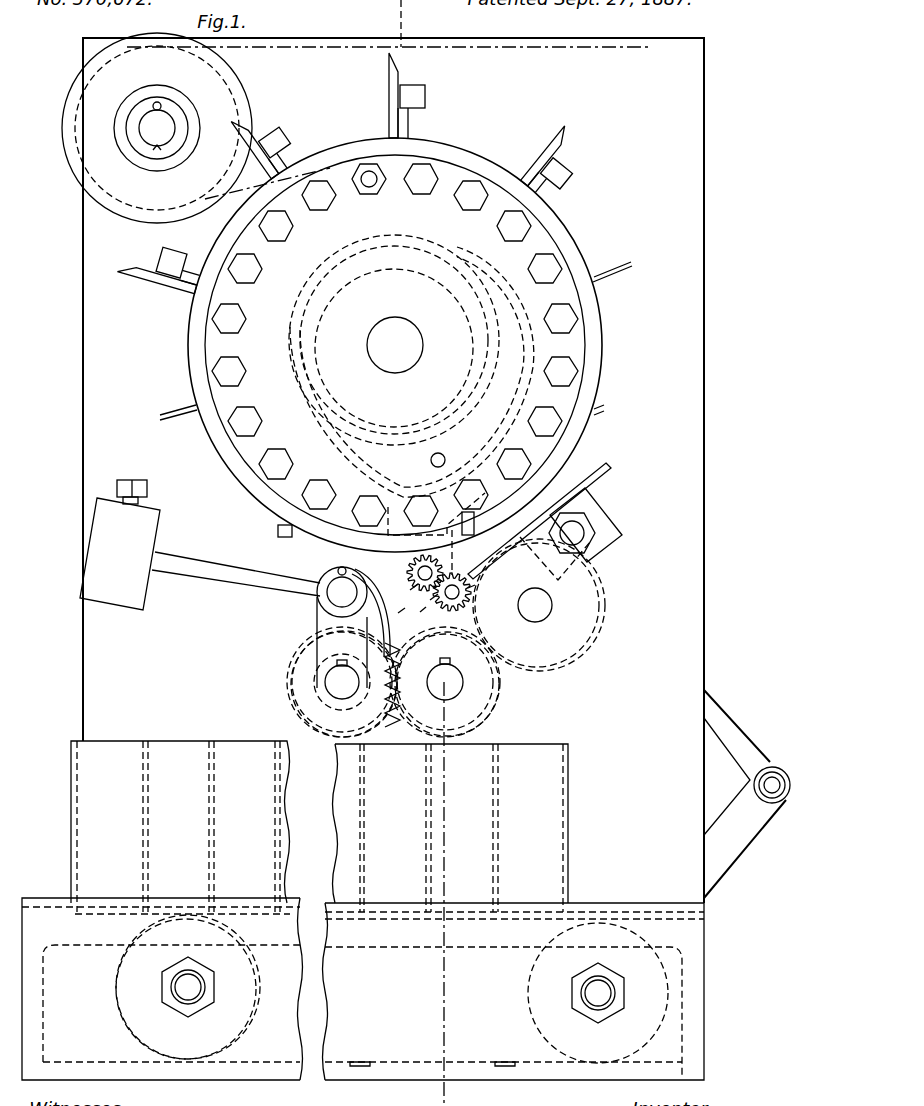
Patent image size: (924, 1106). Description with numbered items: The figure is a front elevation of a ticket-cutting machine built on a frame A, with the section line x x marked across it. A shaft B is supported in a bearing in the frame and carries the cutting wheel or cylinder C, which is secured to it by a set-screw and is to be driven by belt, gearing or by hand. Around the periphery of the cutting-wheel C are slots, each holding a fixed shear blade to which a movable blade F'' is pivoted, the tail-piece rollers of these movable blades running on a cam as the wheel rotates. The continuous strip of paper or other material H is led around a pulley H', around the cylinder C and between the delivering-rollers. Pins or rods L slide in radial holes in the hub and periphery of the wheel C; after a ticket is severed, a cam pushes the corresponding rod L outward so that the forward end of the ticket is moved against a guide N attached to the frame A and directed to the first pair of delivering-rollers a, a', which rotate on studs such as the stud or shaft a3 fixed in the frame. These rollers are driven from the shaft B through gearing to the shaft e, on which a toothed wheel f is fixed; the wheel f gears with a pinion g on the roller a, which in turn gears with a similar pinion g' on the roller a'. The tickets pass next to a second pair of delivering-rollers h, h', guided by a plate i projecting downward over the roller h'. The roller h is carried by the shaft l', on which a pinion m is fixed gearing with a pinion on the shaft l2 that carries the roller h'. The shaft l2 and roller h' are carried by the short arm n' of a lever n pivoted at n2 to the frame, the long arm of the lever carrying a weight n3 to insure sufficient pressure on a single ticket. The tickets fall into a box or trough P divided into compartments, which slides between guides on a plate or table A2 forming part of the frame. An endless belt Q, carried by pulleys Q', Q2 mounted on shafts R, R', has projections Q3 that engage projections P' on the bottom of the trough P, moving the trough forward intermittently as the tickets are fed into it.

The frame A is at (436, 470).
The section line x x is at (395, 23).
The pulley H' is at (157, 128).
The continuous strip of paper or other material H is at (388, 123).
The cutting wheel or cylinder C is at (396, 345).
The shaft B is at (395, 345).
The movable blade of shears F'' is at (354, 173).
The pins or rods L is at (604, 411).
The guide N is at (545, 512).
The weight n3 is at (120, 545).
The lever n is at (236, 574).
The lever pivot n2 is at (342, 592).
The short arm of lever n' is at (353, 628).
The pinion g' is at (432, 542).
The delivering-roller a is at (460, 603).
The delivering-roller a' is at (403, 590).
The stud or shaft a3 is at (422, 600).
The toothed wheel f is at (481, 585).
The plate i is at (399, 622).
The pinion g is at (420, 621).
The shaft e is at (539, 605).
The shaft l2 is at (342, 682).
The delivering-roller h' is at (327, 684).
The pinion m is at (391, 685).
The shaft l' is at (445, 866).
The delivering-roller h is at (456, 684).
The box or trough P is at (319, 826).
The projections on bottom of trough P' is at (363, 989).
The plate or table A2 is at (362, 1011).
The pulley Q' is at (204, 987).
The shaft R is at (188, 987).
The pulley Q2 is at (530, 1003).
The shaft R' is at (598, 993).
The belt projections Q3 is at (358, 1062).
The endless belt Q is at (488, 1047).